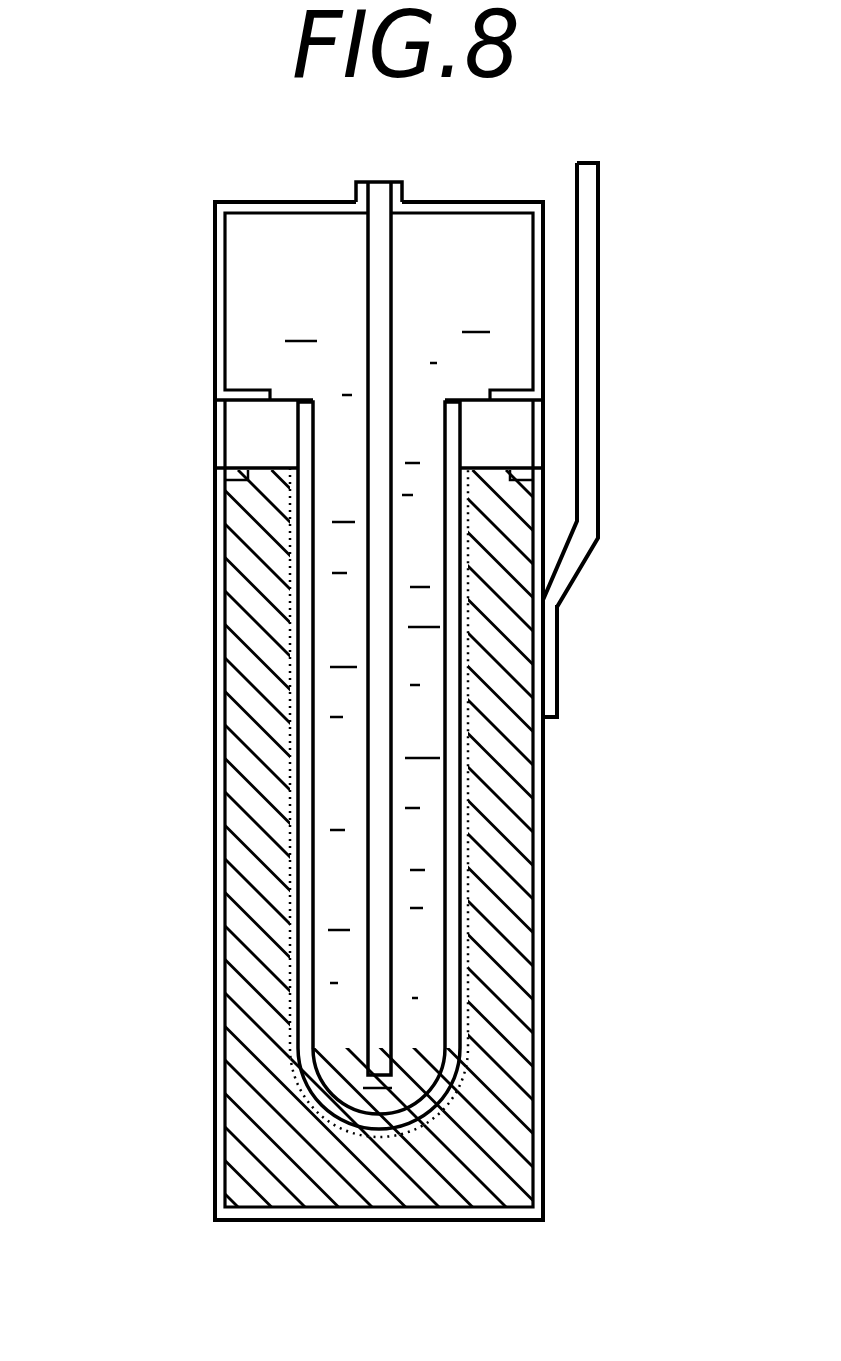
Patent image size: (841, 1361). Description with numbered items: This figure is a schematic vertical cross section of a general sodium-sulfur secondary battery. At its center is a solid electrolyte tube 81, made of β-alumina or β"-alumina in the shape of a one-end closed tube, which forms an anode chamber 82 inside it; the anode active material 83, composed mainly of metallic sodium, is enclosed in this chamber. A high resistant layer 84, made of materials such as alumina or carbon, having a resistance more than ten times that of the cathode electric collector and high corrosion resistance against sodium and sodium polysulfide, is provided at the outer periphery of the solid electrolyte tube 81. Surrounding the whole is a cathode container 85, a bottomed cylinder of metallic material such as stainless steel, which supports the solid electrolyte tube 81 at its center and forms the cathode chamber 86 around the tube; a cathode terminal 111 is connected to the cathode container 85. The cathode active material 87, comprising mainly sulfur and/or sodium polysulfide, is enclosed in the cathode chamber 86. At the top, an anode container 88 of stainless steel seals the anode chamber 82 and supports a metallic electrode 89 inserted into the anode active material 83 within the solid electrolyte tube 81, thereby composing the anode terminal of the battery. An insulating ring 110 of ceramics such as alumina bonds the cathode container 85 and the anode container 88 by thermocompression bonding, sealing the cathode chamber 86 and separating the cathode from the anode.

The solid electrolyte tube 81 is at (450, 607).
The anode chamber 82 is at (343, 1025).
The anode active material 83 is at (330, 615).
The high resistant layer 84 is at (292, 503).
The cathode container 85 is at (215, 920).
The cathode chamber 86 is at (497, 1043).
The cathode active material 87 is at (478, 1167).
The anode container 88 is at (215, 276).
The metallic electrode 89 is at (392, 305).
The insulating ring 110 is at (523, 450).
The cathode terminal 111 is at (600, 208).